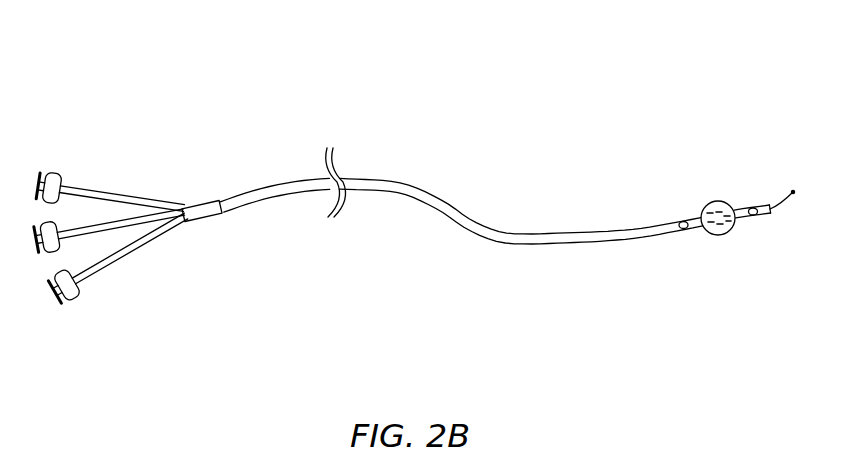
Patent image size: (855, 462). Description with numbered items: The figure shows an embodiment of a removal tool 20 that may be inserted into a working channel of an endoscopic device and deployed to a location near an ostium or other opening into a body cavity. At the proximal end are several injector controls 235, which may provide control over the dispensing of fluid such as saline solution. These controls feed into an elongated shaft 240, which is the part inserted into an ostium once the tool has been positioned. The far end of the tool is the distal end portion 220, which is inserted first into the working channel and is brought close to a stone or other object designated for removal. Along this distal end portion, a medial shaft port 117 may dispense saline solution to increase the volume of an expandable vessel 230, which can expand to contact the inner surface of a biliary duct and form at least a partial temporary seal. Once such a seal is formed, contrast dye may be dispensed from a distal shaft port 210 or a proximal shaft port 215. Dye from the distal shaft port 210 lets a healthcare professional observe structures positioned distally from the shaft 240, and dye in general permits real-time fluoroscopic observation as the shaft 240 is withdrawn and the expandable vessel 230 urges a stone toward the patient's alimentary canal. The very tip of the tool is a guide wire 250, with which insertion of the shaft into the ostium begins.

The removal tool 20 is at (210, 46).
The injector controls 235 is at (23, 238).
The shaft 240 is at (642, 228).
The distal end portion 220 is at (640, 332).
The proximal shaft port 215 is at (683, 221).
The distal shaft port 210 is at (753, 208).
The expandable vessel 230 is at (717, 236).
The medial shaft port 117 is at (712, 202).
The guide wire 250 is at (783, 213).